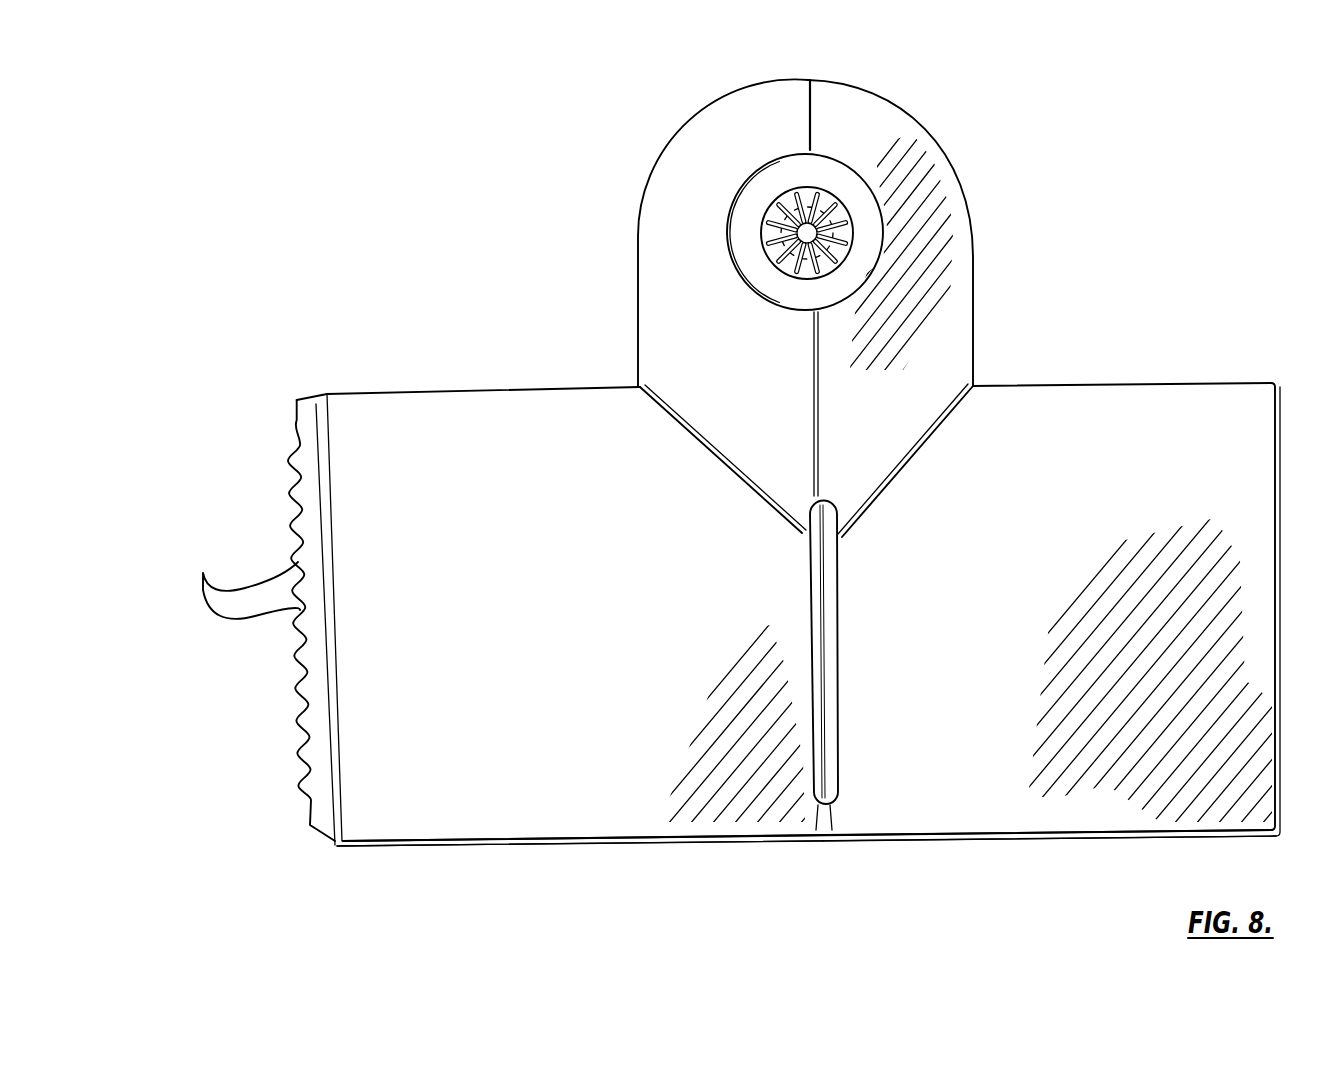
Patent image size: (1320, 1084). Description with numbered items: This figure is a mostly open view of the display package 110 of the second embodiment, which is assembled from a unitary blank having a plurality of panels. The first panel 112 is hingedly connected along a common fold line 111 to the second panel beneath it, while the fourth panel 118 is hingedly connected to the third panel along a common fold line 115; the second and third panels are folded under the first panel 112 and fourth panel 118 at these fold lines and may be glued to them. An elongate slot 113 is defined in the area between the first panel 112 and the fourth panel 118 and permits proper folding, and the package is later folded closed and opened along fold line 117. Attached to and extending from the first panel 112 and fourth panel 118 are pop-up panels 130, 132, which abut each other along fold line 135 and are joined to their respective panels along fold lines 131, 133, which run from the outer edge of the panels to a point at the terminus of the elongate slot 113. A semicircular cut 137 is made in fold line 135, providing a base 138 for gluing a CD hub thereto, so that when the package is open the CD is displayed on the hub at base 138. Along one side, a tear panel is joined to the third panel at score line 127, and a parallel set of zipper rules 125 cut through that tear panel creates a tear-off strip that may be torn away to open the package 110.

The display package 110 is at (1118, 357).
The fold line 111 is at (1022, 832).
The first panel 112 is at (988, 604).
The elongate slot 113 is at (832, 645).
The fold line 115 is at (593, 837).
The fold line 117 is at (827, 732).
The fourth panel 118 is at (548, 604).
The zipper rules 125 is at (237, 578).
The score line 127 is at (320, 398).
The pop-up panel 130 is at (937, 348).
The fold line 131 is at (925, 437).
The pop-up panel 132 is at (663, 252).
The fold line 133 is at (712, 453).
The fold line 135 is at (813, 432).
The semicircular cut 137 is at (725, 235).
The base 138 is at (833, 172).